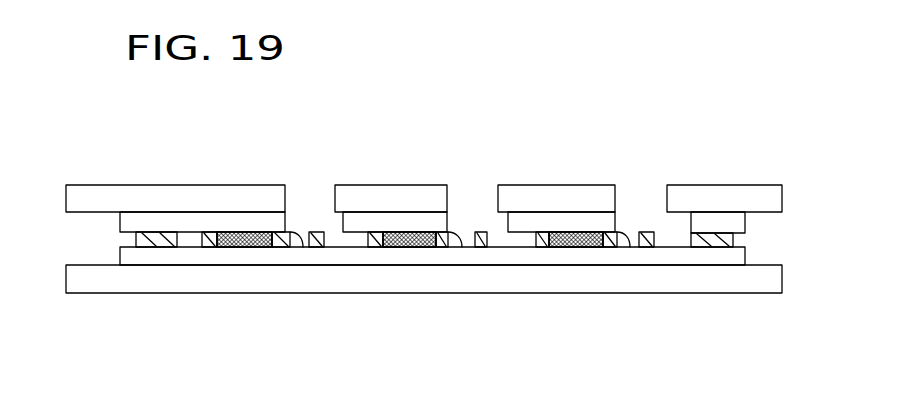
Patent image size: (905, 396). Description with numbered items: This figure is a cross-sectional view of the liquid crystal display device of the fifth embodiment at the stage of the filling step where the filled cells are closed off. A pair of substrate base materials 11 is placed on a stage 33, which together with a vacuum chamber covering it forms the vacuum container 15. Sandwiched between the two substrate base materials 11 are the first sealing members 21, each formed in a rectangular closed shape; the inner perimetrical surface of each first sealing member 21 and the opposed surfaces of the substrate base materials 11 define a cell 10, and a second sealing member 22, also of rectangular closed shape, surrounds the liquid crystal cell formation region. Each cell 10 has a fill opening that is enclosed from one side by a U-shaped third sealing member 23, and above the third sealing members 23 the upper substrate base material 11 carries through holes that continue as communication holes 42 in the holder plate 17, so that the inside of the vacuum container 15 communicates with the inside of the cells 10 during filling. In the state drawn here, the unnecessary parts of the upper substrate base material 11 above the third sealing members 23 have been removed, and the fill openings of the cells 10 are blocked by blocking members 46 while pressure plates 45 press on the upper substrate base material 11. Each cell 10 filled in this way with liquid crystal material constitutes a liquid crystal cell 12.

The cell 10 is at (423, 238).
The substrate base material 11 is at (737, 222).
The liquid crystal cell 12 is at (236, 238).
The vacuum container 15 is at (456, 321).
The holder plate 17 is at (707, 225).
The first sealing member 21 is at (210, 247).
The second sealing member 22 is at (140, 238).
The third sealing member 23 is at (317, 232).
The stage 33 is at (735, 283).
The communication hole 42 is at (285, 228).
The pressure plate 45 is at (762, 195).
The blocking member 46 is at (293, 243).